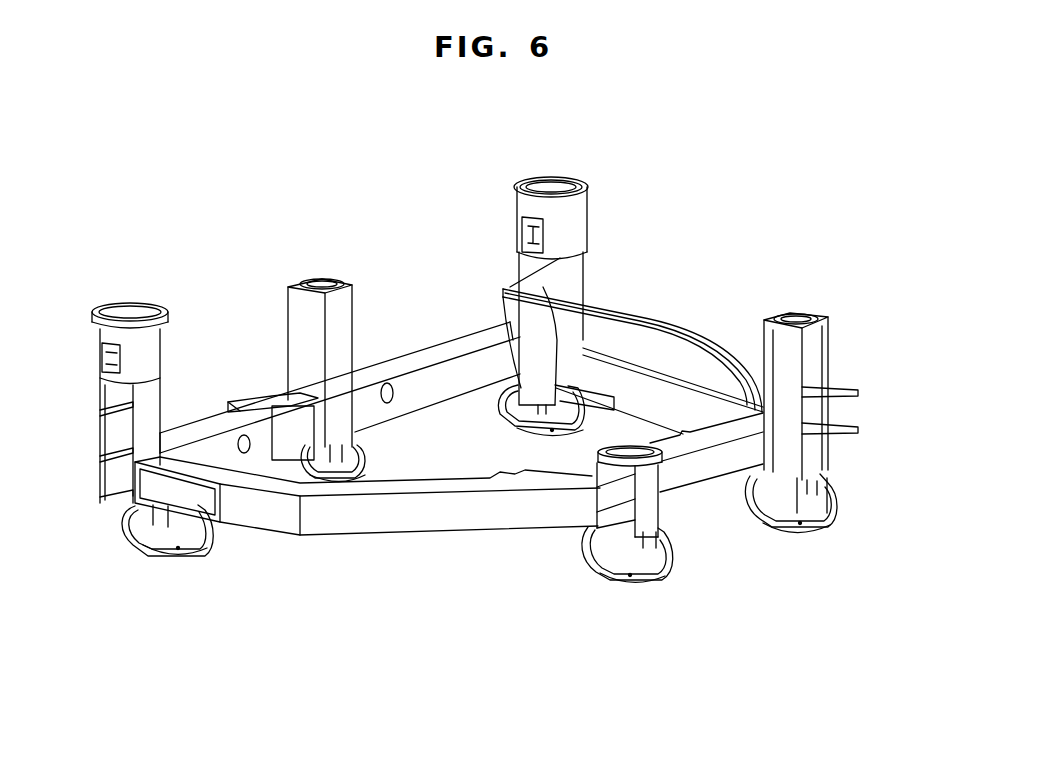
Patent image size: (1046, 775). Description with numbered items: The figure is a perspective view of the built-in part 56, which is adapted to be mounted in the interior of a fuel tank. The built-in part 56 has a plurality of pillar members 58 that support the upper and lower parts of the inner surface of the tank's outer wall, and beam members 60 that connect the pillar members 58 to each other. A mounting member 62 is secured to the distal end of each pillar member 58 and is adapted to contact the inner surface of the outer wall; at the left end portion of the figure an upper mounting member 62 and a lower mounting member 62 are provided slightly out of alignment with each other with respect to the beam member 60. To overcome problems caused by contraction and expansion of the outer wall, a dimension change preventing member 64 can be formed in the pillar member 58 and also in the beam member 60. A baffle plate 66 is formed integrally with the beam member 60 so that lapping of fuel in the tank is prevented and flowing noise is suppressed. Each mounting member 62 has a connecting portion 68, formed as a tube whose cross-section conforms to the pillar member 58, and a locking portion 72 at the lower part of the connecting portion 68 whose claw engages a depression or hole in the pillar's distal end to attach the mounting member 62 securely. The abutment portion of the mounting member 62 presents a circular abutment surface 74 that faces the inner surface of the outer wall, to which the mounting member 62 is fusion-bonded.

The built-in part 56 is at (535, 538).
The pillar member 58 is at (156, 403).
The beam member 60 is at (470, 340).
The mounting member 62 is at (137, 350).
The dimension change preventing member 64 is at (238, 400).
The baffle plate 66 is at (725, 340).
The connecting portion 68 is at (577, 237).
The locking portion 72 is at (517, 223).
The abutment surface 74 is at (557, 173).